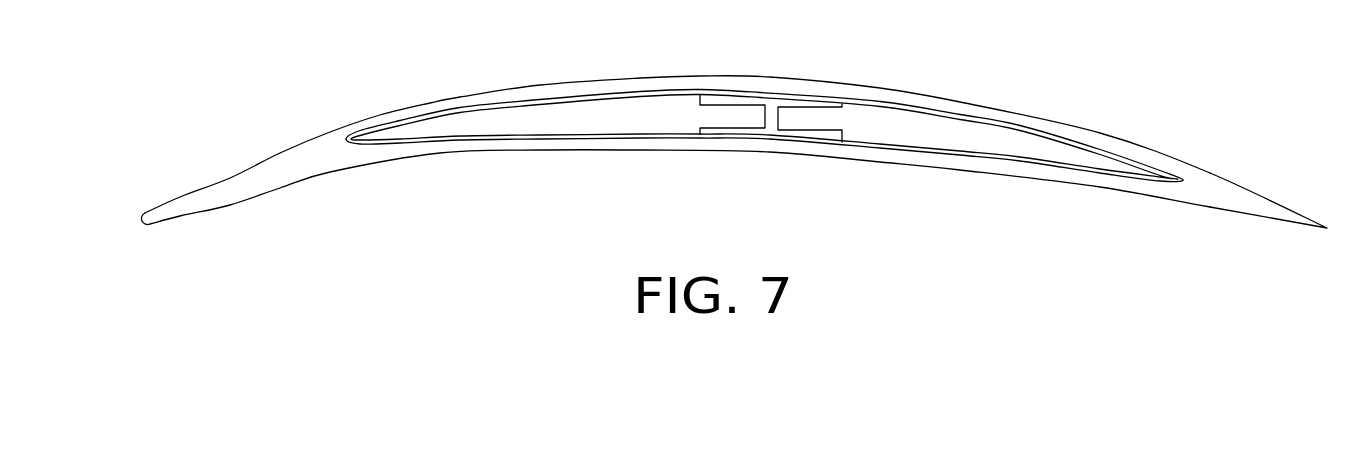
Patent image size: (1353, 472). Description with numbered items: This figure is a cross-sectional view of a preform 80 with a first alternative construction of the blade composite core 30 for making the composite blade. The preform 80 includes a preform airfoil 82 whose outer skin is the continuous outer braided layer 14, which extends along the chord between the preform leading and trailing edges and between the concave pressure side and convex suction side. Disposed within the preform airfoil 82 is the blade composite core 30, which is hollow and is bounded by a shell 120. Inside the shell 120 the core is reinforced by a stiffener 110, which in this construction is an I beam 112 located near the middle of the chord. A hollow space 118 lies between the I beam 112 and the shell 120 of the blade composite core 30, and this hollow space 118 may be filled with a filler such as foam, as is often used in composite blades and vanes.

The continuous outer braided layer 14 is at (1023, 121).
The blade composite core 30 is at (800, 95).
The preform 80 is at (412, 210).
The preform airfoil 82 is at (1178, 160).
The stiffener 110 is at (717, 95).
The I beam 112 is at (783, 117).
The hollow space 118 is at (565, 118).
The shell 120 is at (398, 122).